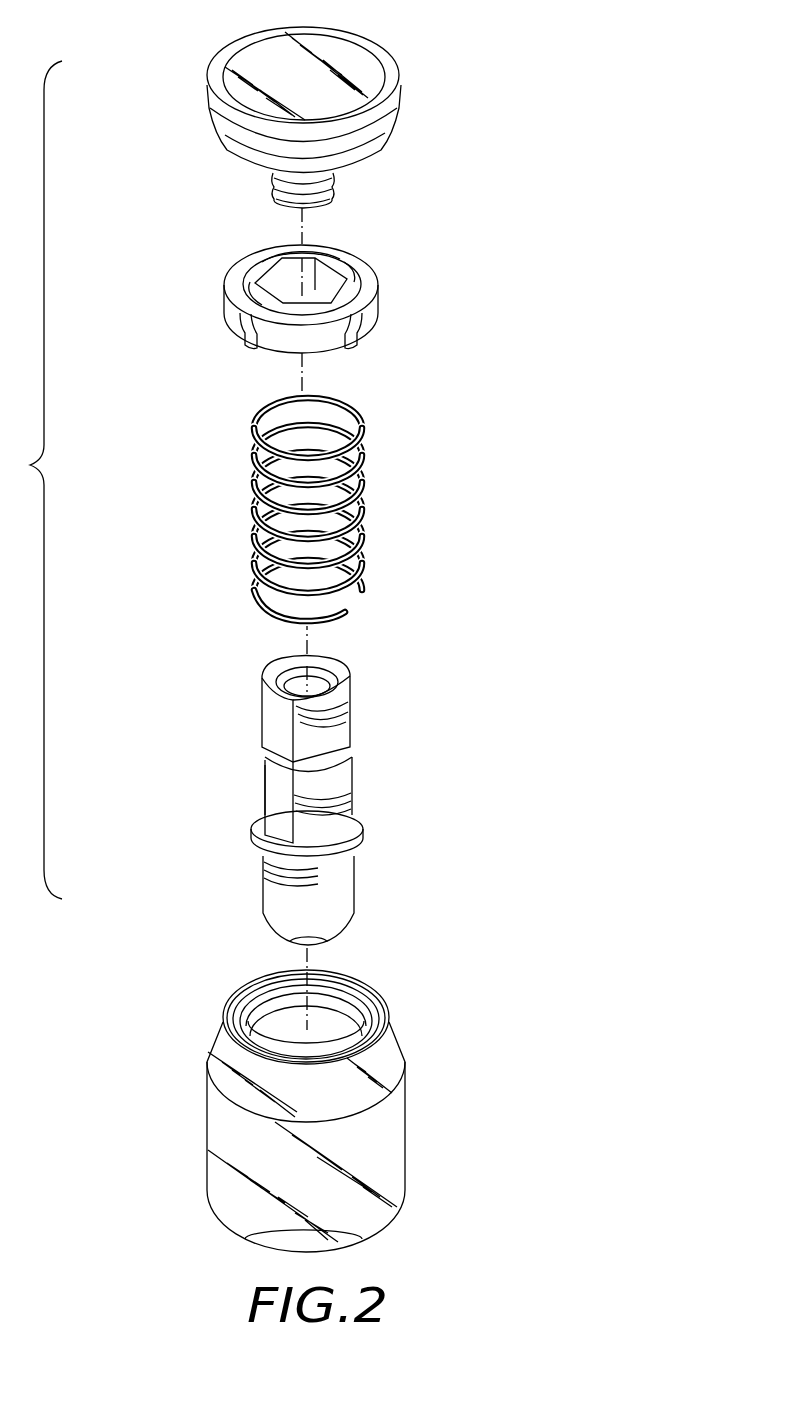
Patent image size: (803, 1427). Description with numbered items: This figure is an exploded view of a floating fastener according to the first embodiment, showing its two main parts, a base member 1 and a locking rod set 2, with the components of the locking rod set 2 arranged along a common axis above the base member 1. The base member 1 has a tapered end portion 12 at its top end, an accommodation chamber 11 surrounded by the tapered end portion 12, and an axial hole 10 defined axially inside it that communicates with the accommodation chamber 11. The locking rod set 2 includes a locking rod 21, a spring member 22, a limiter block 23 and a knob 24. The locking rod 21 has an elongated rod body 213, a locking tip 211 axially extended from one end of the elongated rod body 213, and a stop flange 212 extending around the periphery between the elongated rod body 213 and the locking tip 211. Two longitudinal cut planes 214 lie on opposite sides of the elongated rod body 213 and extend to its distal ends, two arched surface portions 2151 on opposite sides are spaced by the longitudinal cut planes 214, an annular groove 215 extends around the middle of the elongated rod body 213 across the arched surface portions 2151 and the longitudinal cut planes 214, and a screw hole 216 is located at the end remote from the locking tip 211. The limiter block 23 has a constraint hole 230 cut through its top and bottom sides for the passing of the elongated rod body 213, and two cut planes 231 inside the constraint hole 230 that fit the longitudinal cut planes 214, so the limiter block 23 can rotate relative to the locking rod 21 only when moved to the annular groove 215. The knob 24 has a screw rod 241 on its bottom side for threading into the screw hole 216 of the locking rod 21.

The base member 1 is at (319, 1082).
The axial hole 10 is at (340, 1034).
The accommodation chamber 11 is at (245, 1030).
The tapered end portion 12 is at (235, 1062).
The locking rod set 2 is at (36, 480).
The locking rod 21 is at (322, 779).
The locking tip 211 is at (275, 890).
The stop flange 212 is at (352, 838).
The elongated rod body 213 is at (343, 687).
The longitudinal cut planes 214 is at (346, 668).
The annular groove 215 is at (241, 784).
The arched surface portions 2151 is at (322, 764).
The screw hole 216 is at (297, 685).
The spring member 22 is at (358, 503).
The limiter block 23 is at (304, 280).
The constraint hole 230 is at (295, 292).
The cut planes 231 is at (320, 278).
The knob 24 is at (385, 93).
The screw rod 241 is at (283, 188).